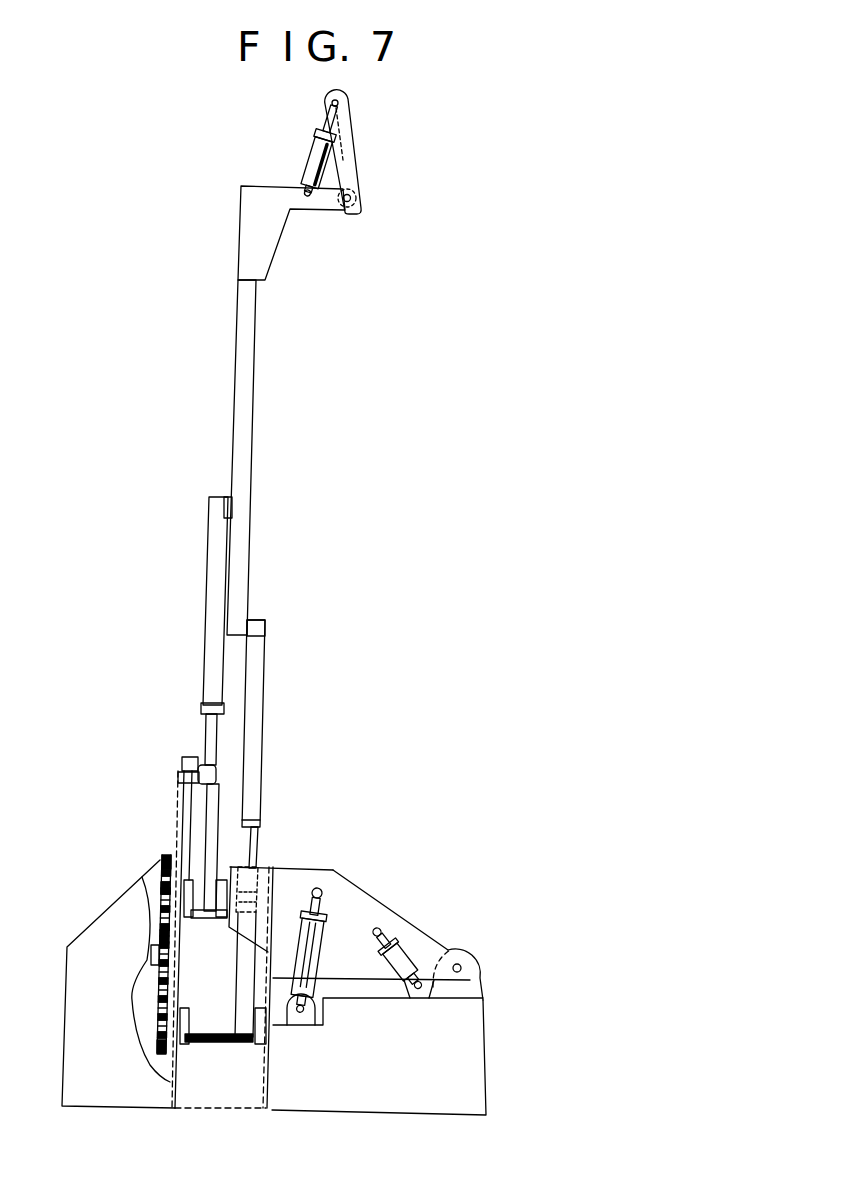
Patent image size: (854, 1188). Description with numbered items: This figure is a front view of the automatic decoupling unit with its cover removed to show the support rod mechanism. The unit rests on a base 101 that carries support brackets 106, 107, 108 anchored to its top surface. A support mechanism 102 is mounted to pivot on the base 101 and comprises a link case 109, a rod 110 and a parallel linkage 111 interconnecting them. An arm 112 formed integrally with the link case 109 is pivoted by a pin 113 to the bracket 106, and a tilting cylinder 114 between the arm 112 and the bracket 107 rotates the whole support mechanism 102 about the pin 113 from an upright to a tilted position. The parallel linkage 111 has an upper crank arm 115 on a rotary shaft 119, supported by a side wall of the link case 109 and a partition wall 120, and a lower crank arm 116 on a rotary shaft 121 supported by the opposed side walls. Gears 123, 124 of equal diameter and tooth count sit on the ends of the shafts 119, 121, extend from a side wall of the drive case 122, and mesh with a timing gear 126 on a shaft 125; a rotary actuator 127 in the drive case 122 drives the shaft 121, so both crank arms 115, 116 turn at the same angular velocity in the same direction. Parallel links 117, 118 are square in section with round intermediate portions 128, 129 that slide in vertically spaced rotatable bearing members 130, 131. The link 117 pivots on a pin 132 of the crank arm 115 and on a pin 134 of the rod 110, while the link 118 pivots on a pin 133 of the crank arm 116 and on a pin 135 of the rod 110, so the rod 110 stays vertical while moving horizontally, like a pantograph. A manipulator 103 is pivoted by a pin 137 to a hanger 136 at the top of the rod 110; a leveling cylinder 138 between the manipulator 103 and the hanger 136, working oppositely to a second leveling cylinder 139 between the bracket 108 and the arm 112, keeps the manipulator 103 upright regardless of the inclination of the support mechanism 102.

The base 101 is at (403, 1049).
The support mechanism 102 is at (181, 832).
The manipulator 103 is at (359, 213).
The support bracket 106 is at (480, 999).
The support bracket 107 is at (303, 1020).
The support bracket 108 is at (417, 993).
The link case 109 is at (172, 1093).
The rod 110 is at (245, 374).
The parallel linkage 111 is at (191, 605).
The arm 112 is at (370, 905).
The pin 113 is at (461, 968).
The tilting cylinder 114 is at (316, 937).
The upper crank arm 115 is at (229, 974).
The lower crank arm 116 is at (258, 1046).
The parallel link 117 is at (213, 548).
The parallel link 118 is at (255, 742).
The rotary shaft 119 is at (160, 901).
The partition wall 120 is at (263, 877).
The rotary shaft 121 is at (176, 1004).
The drive case 122 is at (72, 1035).
The gear 123 is at (162, 864).
The gear 124 is at (160, 1042).
The shaft 125 is at (157, 962).
The timing gear 126 is at (160, 937).
The rotary actuator 127 is at (142, 1010).
The round intermediate portion 128 is at (207, 728).
The round intermediate portion 129 is at (258, 846).
The rotatable bearing member 130 is at (215, 777).
The rotatable bearing member 131 is at (270, 891).
The pin 132 is at (223, 926).
The pin 133 is at (213, 1034).
The pin 134 is at (228, 509).
The pin 135 is at (248, 632).
The hanger 136 is at (266, 268).
The pin 137 is at (352, 198).
The leveling cylinder 138 is at (318, 148).
The leveling cylinder 139 is at (392, 955).